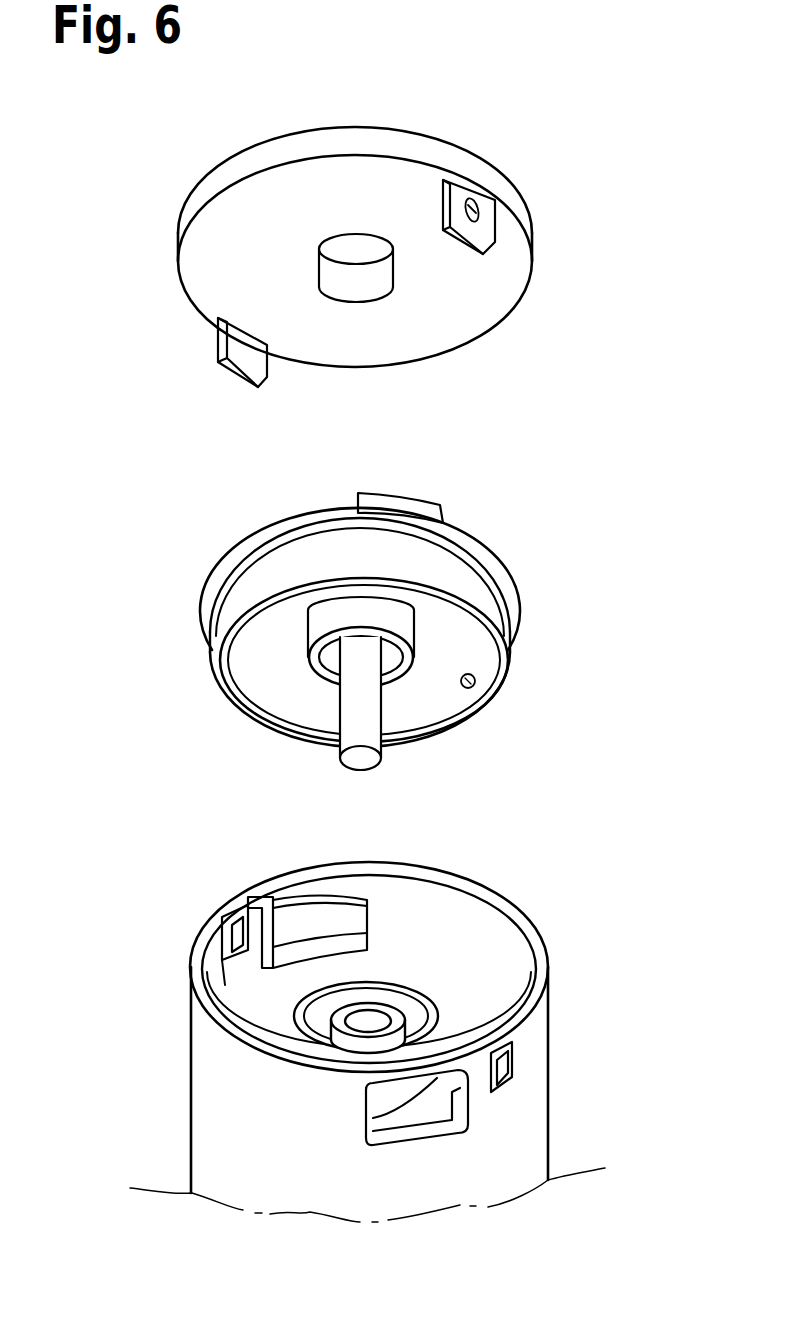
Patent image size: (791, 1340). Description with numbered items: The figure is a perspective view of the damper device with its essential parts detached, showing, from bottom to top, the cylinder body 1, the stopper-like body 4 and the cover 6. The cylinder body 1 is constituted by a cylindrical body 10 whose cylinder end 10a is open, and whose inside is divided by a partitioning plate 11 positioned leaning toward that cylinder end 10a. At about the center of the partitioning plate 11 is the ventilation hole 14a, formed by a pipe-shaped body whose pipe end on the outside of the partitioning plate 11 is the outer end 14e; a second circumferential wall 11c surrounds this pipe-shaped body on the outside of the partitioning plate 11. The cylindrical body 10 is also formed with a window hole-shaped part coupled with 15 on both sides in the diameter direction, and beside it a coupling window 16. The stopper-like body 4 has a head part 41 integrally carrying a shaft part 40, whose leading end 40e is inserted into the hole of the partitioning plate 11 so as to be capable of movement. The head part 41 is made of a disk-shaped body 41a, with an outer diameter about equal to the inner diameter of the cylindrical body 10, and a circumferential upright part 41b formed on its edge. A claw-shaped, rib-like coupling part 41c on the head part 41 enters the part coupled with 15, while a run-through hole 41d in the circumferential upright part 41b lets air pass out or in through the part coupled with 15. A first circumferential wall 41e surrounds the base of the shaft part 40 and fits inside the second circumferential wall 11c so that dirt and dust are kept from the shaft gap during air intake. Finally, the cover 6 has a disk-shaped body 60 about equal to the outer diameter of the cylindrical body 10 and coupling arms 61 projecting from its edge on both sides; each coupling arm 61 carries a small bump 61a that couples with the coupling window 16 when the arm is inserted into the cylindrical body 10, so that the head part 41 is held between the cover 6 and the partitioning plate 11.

The cylinder body 1 is at (407, 1047).
The cylindrical body 10 is at (401, 1047).
The cylinder end 10a is at (538, 942).
The partitioning plate 11 is at (457, 1012).
The second circumferential wall 11c is at (525, 940).
The ventilation hole 14a is at (366, 1015).
The outer end 14e is at (395, 1000).
The part coupled with 15 is at (310, 908).
The coupling window 16 is at (222, 920).
The stopper-like body 4 is at (364, 606).
The shaft part 40 is at (374, 713).
The leading end 40e is at (367, 762).
The head part 41 is at (364, 585).
The disk-shaped body 41a is at (238, 537).
The circumferential upright part 41b is at (225, 612).
The coupling part 41c is at (407, 507).
The run-through hole 41d is at (475, 688).
The first circumferential wall 41e is at (405, 628).
The cover 6 is at (355, 203).
The disk-shaped body 60 is at (360, 137).
The coupling arm 61 is at (488, 237).
The small bump 61a is at (480, 204).